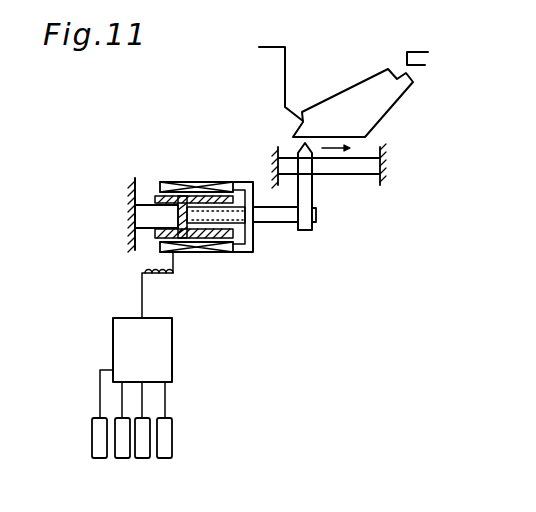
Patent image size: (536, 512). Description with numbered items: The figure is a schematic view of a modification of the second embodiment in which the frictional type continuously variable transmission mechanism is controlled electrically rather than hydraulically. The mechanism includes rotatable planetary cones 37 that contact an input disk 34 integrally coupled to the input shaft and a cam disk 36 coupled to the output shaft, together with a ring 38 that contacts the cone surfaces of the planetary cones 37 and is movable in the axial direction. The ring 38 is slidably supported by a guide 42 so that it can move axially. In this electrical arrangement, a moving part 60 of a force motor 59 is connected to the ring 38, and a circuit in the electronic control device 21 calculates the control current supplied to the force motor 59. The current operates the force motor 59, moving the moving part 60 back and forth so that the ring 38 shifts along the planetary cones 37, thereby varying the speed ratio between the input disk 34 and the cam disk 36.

The electronic control device 21 is at (172, 355).
The input disk 34 is at (425, 65).
The cam disk 36 is at (285, 91).
The planetary cone 37 is at (383, 112).
The ring 38 is at (313, 193).
The guide 42 is at (367, 167).
The force motor 59 is at (188, 175).
The moving part 60 is at (277, 218).